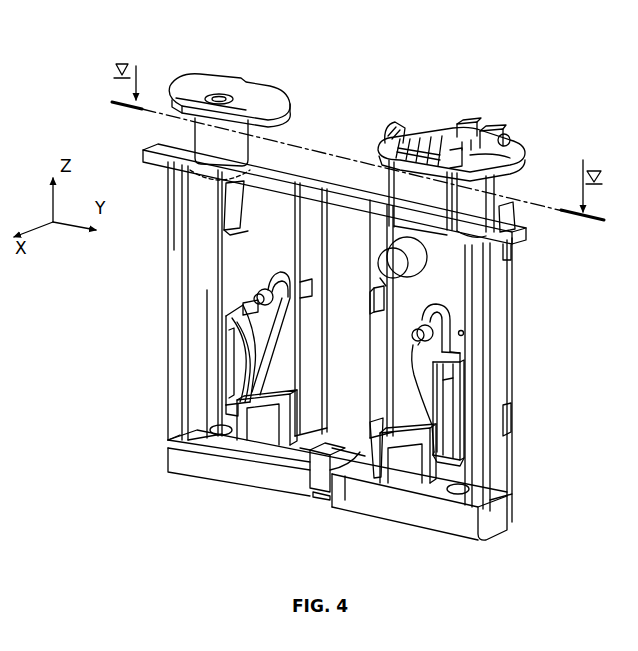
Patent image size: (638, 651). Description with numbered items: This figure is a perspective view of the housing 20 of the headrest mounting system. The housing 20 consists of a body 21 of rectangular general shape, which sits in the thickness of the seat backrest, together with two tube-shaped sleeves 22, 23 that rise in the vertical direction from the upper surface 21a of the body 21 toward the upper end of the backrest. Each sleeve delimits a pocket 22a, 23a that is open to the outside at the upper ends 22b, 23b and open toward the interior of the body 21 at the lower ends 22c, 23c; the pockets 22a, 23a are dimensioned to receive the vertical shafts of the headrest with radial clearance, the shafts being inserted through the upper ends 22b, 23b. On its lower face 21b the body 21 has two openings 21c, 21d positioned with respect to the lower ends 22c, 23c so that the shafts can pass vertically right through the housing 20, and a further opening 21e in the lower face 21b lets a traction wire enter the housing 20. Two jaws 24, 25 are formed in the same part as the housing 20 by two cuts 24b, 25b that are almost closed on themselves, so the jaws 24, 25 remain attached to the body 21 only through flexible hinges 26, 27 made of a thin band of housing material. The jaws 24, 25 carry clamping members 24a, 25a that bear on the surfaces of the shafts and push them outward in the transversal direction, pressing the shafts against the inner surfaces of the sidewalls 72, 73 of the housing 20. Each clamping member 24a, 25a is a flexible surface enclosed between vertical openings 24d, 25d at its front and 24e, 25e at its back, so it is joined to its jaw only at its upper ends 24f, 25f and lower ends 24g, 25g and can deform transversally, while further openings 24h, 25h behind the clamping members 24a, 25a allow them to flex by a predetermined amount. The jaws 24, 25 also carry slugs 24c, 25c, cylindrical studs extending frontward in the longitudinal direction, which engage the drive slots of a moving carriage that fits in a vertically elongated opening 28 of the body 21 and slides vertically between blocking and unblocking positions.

The housing 20 is at (478, 570).
The body 21 is at (500, 482).
The upper surface 21a is at (320, 183).
The lower face 21b is at (391, 523).
The opening 21c is at (205, 437).
The opening 21d is at (482, 500).
The opening 21e is at (324, 482).
The sleeve 22 is at (472, 202).
The pocket 22a is at (485, 128).
The upper end 22b is at (437, 138).
The lower end 22c is at (512, 247).
The sleeve 23 is at (205, 147).
The pocket 23a is at (228, 90).
The upper end 23b is at (258, 100).
The lower end 23c is at (180, 182).
The jaw 24 is at (263, 320).
The clamping member 24a is at (227, 367).
The cut 24b is at (268, 395).
The slug 24c is at (262, 300).
The vertical opening 24d is at (243, 347).
The vertical opening 24e is at (221, 343).
The upper end 24f is at (247, 340).
The lower end 24g is at (237, 395).
The opening 24h is at (237, 382).
The jaw 25 is at (428, 358).
The clamping member 25a is at (440, 410).
The cut 25b is at (448, 312).
The slug 25c is at (450, 327).
The vertical opening 25d is at (460, 430).
The vertical opening 25e is at (467, 418).
The upper end 25f is at (457, 370).
The lower end 25g is at (458, 452).
The opening 25h is at (452, 430).
The flexible hinge 26 is at (210, 434).
The flexible hinge 27 is at (426, 484).
The opening 28 is at (367, 428).
The sidewall 72 is at (200, 222).
The sidewall 73 is at (463, 333).